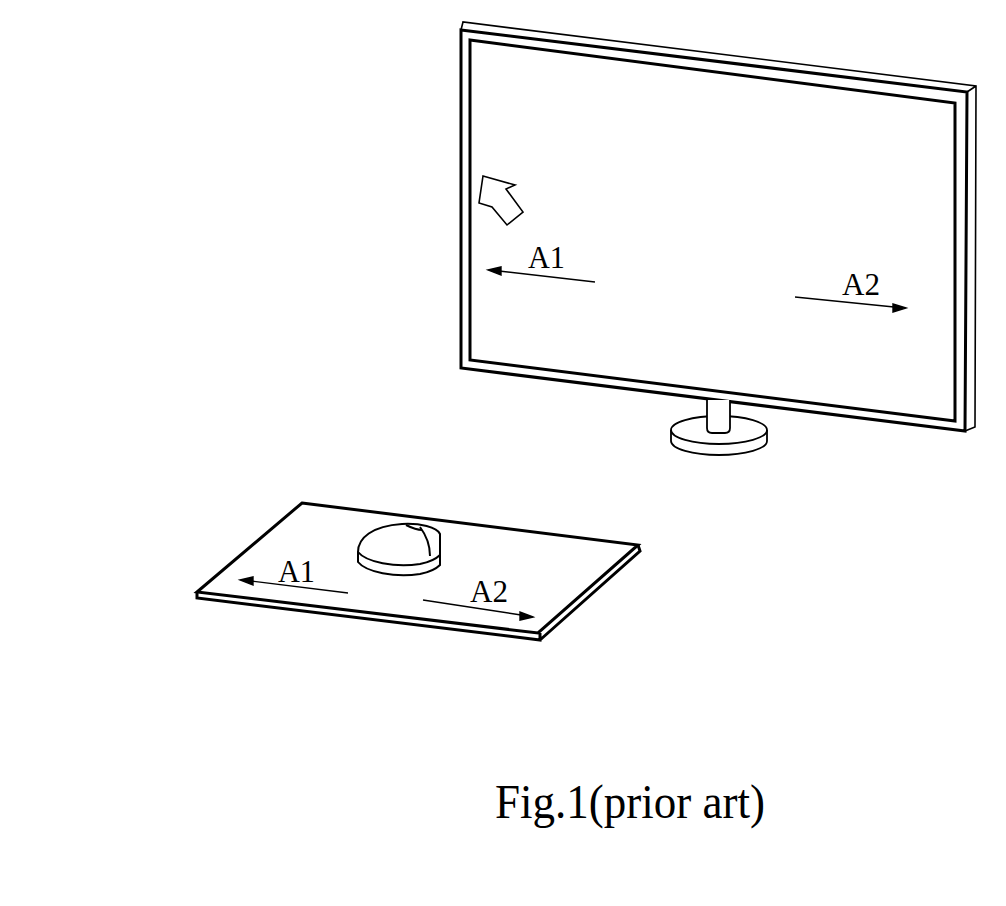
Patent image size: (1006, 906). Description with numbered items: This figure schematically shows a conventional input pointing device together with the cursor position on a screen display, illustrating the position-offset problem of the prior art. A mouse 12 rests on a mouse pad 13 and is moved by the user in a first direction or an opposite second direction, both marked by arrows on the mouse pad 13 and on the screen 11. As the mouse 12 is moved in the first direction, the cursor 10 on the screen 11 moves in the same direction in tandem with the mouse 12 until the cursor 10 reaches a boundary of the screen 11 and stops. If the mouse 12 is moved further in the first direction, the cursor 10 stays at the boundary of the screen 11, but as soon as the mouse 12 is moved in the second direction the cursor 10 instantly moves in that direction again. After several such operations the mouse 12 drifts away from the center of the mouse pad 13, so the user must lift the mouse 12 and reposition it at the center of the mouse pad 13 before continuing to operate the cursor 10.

The cursor 10 is at (502, 215).
The screen 11 is at (461, 124).
The mouse 12 is at (392, 552).
The mouse pad 13 is at (285, 510).